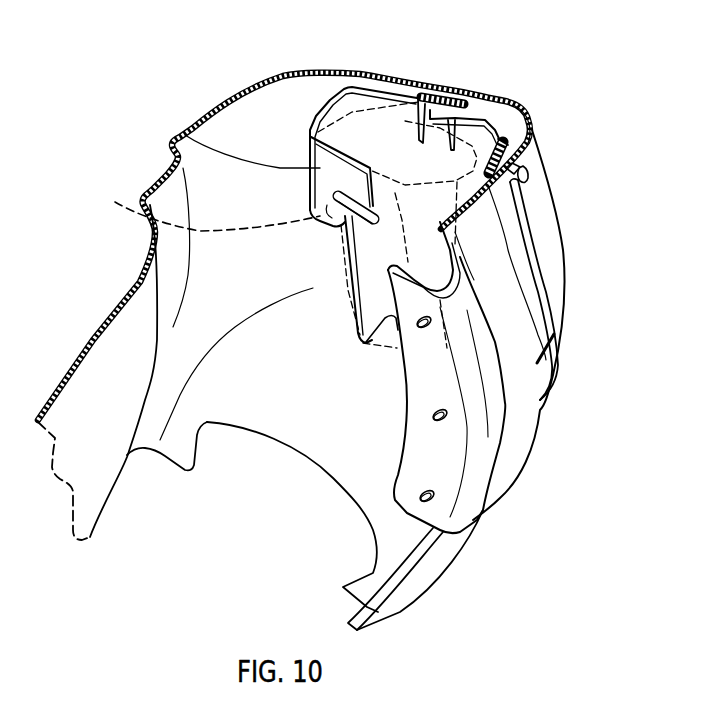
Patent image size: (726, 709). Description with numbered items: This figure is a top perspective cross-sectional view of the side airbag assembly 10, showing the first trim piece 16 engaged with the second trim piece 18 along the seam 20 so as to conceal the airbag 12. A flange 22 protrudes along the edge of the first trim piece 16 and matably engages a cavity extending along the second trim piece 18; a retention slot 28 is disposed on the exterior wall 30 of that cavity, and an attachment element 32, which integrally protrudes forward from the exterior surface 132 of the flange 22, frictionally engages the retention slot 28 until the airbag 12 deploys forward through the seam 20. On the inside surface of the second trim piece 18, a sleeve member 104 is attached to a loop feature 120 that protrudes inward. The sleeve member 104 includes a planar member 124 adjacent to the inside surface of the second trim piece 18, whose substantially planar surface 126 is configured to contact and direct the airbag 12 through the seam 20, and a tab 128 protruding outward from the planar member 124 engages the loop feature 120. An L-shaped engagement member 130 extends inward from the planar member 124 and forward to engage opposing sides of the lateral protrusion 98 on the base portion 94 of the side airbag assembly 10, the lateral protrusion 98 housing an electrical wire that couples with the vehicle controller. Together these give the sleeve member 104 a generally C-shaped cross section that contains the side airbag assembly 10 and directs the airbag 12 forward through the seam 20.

The side airbag assembly 10 is at (339, 320).
The airbag 12 is at (330, 116).
The first trim piece 16 is at (483, 468).
The second trim piece 18 is at (552, 240).
The seam 20 is at (548, 283).
The flange 22 is at (531, 134).
The retention slot 28 is at (527, 170).
The exterior wall 30 is at (508, 150).
The attachment element 32 is at (524, 176).
The base portion 94 is at (350, 122).
The lateral protrusion 98 is at (208, 209).
The sleeve member 104 is at (311, 124).
The loop feature 120 is at (487, 100).
The planar member 124 is at (413, 100).
The substantially planar surface 126 is at (400, 120).
The tab 128 is at (433, 96).
The L-shaped engagement member 130 is at (185, 136).
The exterior surface 132 is at (538, 290).